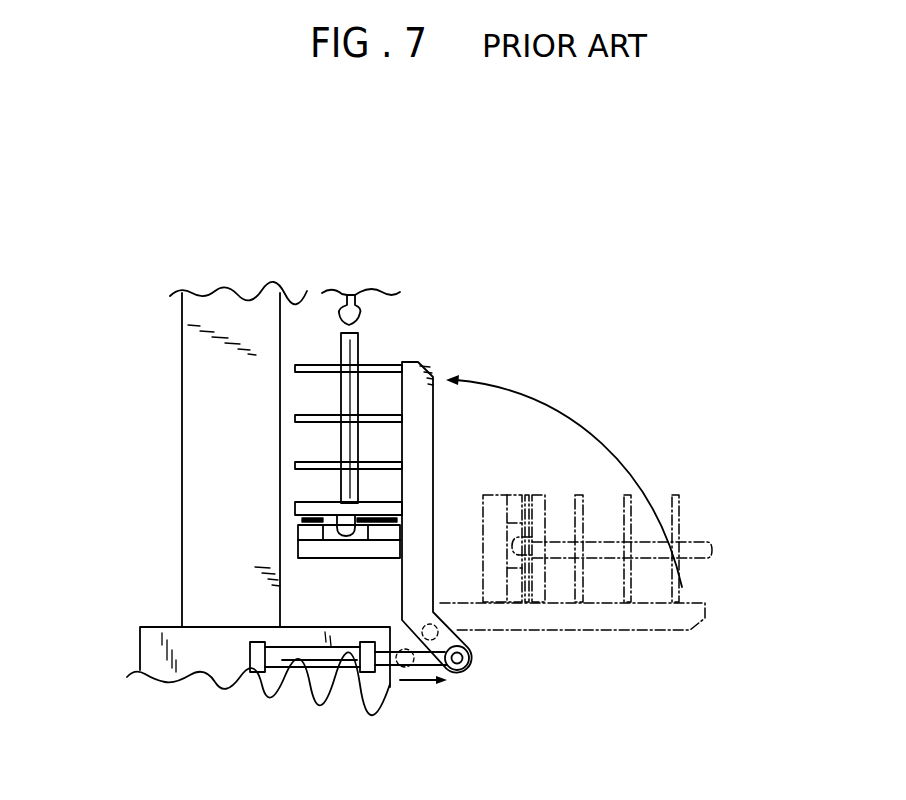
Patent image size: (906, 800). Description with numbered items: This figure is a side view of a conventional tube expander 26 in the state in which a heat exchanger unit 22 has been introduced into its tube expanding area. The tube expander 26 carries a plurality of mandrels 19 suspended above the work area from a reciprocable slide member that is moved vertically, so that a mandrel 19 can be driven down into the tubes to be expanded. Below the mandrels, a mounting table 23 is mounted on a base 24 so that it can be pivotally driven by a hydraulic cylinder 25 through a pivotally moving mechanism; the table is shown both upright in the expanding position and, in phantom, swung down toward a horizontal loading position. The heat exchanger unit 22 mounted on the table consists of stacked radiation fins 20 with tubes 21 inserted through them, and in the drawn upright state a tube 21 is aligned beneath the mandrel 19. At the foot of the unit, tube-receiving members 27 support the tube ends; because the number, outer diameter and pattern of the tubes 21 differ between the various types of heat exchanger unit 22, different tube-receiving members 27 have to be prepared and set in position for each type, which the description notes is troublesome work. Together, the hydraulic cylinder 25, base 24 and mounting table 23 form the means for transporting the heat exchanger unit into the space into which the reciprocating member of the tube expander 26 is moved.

The mandrel 19 is at (362, 313).
The radiation fins 20 is at (318, 424).
The tubes 21 is at (352, 348).
The heat exchanger unit 22 is at (310, 405).
The mounting table 23 is at (433, 466).
The base 24 is at (150, 650).
The hydraulic cylinder 25 is at (311, 660).
The tube expander 26 is at (173, 400).
The tube-receiving members 27 is at (334, 527).